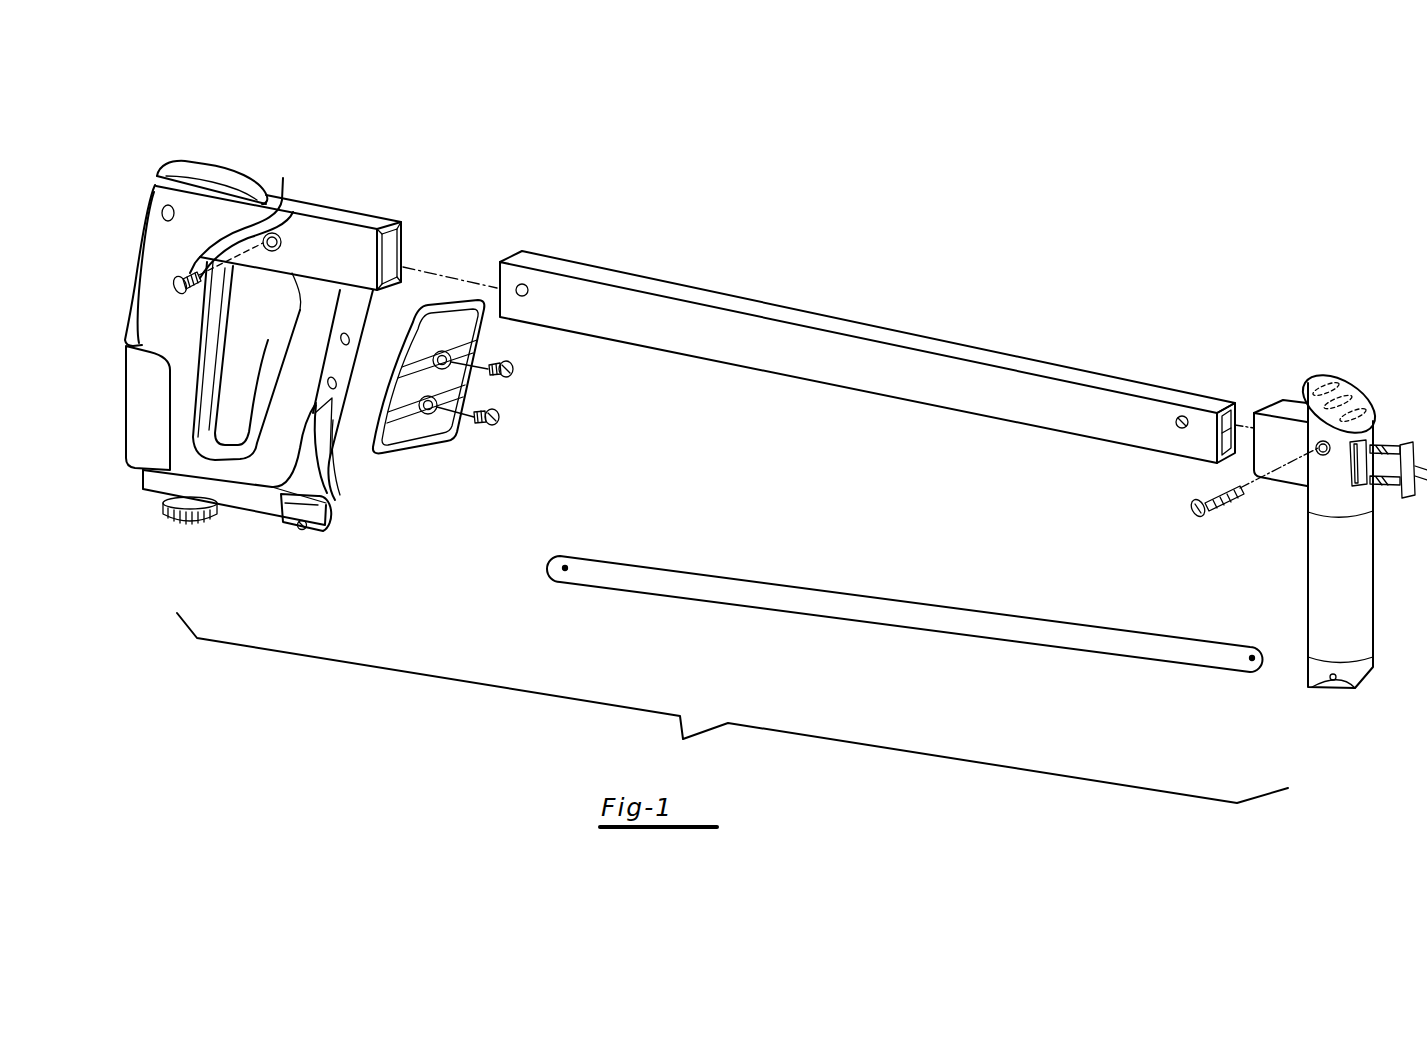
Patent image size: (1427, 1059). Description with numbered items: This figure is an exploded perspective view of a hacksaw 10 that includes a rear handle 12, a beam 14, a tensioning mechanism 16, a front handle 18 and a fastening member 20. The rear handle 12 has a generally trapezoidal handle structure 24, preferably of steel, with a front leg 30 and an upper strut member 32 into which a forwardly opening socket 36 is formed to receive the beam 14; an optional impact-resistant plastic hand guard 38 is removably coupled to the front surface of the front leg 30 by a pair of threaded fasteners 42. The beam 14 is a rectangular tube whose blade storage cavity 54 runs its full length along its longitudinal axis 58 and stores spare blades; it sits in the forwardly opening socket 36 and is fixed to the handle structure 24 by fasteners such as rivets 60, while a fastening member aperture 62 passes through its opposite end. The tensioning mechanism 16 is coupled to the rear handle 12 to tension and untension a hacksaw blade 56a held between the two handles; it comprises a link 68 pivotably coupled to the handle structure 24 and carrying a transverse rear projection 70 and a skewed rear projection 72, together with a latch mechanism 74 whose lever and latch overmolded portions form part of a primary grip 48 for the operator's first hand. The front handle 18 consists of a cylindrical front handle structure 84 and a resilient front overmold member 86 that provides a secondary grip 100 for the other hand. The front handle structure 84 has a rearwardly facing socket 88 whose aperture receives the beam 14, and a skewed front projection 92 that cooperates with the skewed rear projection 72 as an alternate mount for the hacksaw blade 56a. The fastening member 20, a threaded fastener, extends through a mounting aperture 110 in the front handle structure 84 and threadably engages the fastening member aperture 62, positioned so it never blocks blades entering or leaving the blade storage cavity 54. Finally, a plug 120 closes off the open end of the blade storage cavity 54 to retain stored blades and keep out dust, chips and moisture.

The hacksaw 10 is at (460, 705).
The rear handle 12 is at (306, 204).
The beam 14 is at (796, 297).
The tensioning mechanism 16 is at (291, 353).
The front handle 18 is at (1337, 513).
The fastening member 20 is at (1240, 522).
The handle structure 24 is at (173, 326).
The front leg 30 is at (313, 335).
The upper strut member 32 is at (362, 217).
The forwardly opening socket 36 is at (395, 249).
The hand guard 38 is at (498, 340).
The threaded fasteners 42 is at (513, 380).
The primary grip 48 is at (137, 200).
The blade storage cavity 54 is at (1237, 405).
The hacksaw blade 56a is at (786, 584).
The longitudinal axis 58 is at (450, 260).
The rivets 60 is at (283, 200).
The fastening member aperture 62 is at (1180, 420).
The link 68 is at (253, 516).
The transverse rear projection 70 is at (335, 497).
The skewed rear projection 72 is at (302, 528).
The latch mechanism 74 is at (136, 484).
The front handle structure 84 is at (1371, 509).
The front overmold member 86 is at (1310, 589).
The rearwardly facing socket 88 is at (1238, 466).
The skewed front projection 92 is at (1337, 684).
The secondary grip 100 is at (1384, 625).
The mounting aperture 110 is at (1321, 441).
The plug 120 is at (1384, 422).